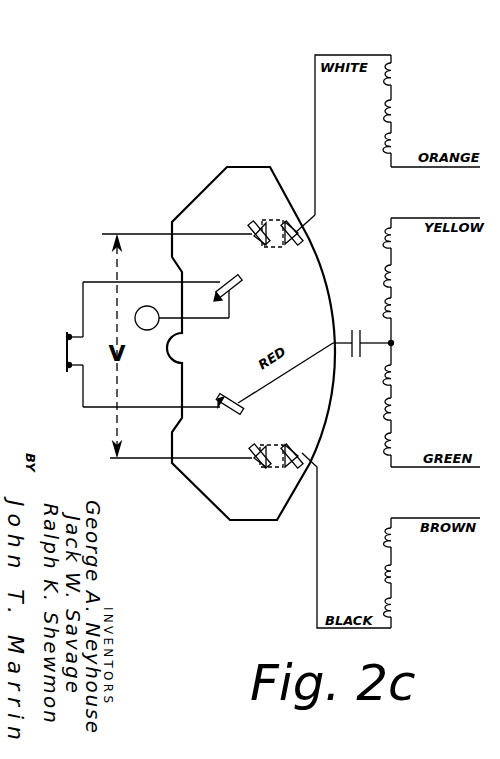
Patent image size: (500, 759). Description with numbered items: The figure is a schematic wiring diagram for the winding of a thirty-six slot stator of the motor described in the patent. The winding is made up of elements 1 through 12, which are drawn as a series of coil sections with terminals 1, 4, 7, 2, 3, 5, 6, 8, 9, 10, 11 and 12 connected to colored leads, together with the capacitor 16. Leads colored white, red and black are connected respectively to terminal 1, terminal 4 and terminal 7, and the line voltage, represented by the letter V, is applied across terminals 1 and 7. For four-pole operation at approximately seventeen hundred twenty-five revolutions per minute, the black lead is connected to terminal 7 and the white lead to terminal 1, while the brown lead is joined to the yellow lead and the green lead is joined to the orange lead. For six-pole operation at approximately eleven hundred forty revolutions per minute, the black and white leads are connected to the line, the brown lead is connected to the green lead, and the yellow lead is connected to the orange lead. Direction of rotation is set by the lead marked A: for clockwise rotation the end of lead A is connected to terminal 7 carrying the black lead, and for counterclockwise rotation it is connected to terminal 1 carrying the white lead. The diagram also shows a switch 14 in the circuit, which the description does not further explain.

The terminal 1 is at (329, 154).
The winding element 2 is at (398, 607).
The winding element 3 is at (397, 238).
The terminal 4 is at (307, 270).
The winding element 5 is at (397, 308).
The winding element 6 is at (397, 276).
The terminal 7 is at (330, 449).
The winding element 8 is at (397, 375).
The winding element 9 is at (398, 540).
The winding element 10 is at (402, 444).
The winding element 11 is at (401, 144).
The winding element 12 is at (402, 574).
The centrifugal switch 14 is at (65, 359).
The capacitor 16 is at (359, 358).
The lead A is at (188, 302).